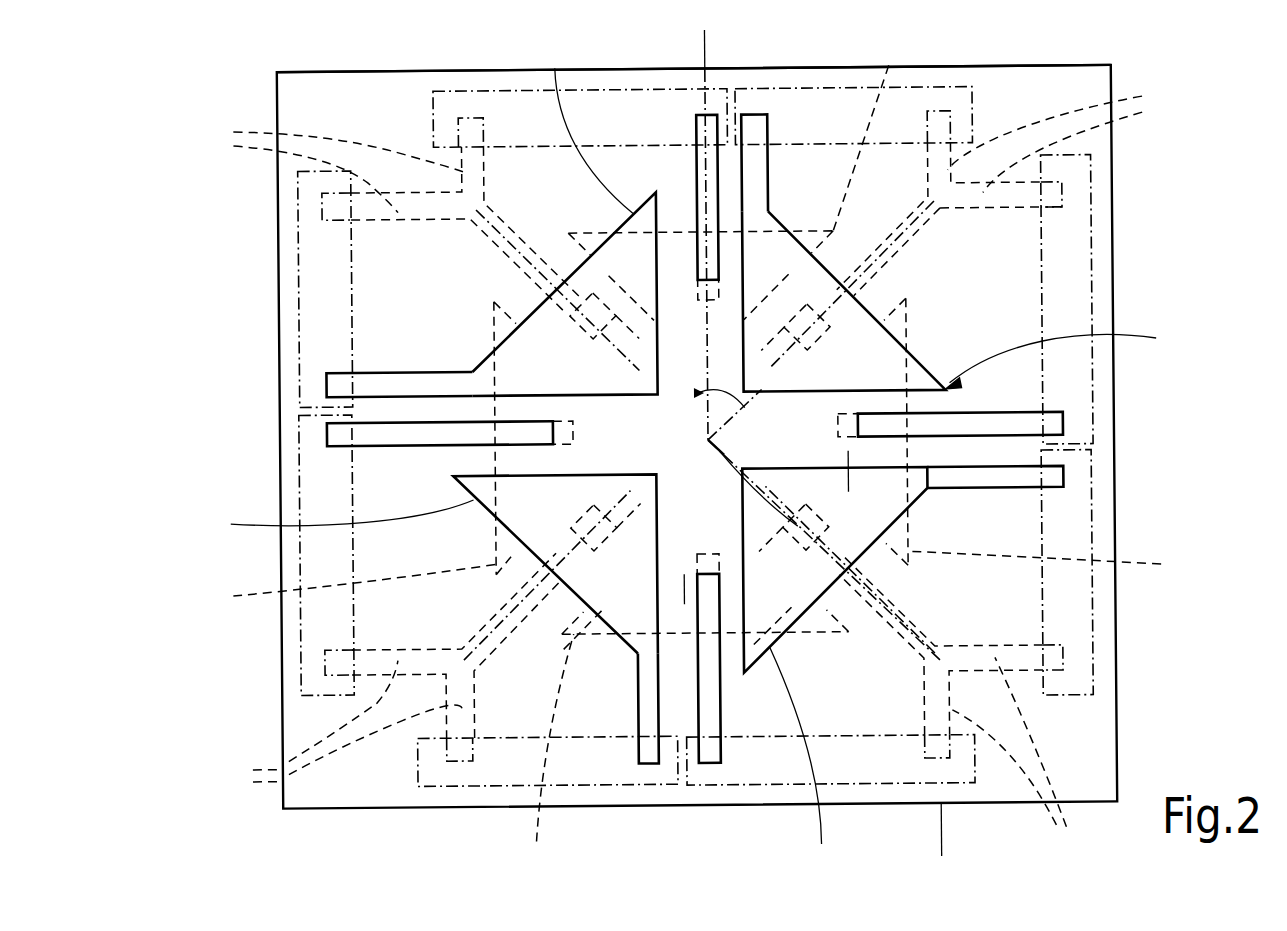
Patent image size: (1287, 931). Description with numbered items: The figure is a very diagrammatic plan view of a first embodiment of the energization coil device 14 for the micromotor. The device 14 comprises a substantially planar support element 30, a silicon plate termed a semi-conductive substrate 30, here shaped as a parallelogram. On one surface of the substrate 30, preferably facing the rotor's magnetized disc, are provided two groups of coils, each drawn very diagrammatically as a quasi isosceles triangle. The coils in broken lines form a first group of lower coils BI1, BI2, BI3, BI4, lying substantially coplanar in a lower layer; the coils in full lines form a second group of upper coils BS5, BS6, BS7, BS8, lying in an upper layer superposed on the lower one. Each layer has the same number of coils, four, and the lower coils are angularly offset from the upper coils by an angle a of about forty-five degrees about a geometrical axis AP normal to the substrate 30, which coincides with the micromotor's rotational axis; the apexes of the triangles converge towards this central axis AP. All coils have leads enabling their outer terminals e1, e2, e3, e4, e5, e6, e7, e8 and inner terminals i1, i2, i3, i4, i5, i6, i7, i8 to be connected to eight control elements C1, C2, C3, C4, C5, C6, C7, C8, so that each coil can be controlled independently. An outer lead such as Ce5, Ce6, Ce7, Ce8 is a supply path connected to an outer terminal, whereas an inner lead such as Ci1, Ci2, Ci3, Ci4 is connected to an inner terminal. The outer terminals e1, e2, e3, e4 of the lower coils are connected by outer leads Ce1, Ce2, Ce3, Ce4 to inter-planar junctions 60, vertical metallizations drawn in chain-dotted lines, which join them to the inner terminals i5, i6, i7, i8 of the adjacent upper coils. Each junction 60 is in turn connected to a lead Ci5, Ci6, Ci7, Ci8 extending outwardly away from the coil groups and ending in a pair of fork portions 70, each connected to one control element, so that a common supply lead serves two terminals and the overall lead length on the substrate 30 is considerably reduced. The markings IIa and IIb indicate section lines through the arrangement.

The energization coil device 14 is at (446, 70).
The support element 30 is at (280, 100).
The fork portions 70 is at (234, 144).
The control element C1 is at (703, 790).
The control element C2 is at (1082, 683).
The control element C3 is at (1066, 433).
The control element C4 is at (928, 106).
The control element C5 is at (513, 114).
The control element C6 is at (322, 276).
The control element C7 is at (302, 678).
The control element C8 is at (428, 766).
The inner lead Ci1 is at (720, 708).
The inner lead Ci2 is at (958, 420).
The inner lead Ci3 is at (700, 178).
The inner lead Ci4 is at (390, 438).
The inner lead Ci5 is at (899, 642).
The inner lead Ci6 is at (918, 250).
The inner lead Ci7 is at (508, 224).
The inner lead Ci8 is at (472, 634).
The outer lead Ce1 is at (768, 548).
The outer lead Ce2 is at (788, 357).
The outer lead Ce3 is at (628, 342).
The outer lead Ce4 is at (624, 505).
The outer lead Ce5 is at (993, 480).
The outer lead Ce6 is at (766, 172).
The outer lead Ce7 is at (393, 382).
The outer lead Ce8 is at (640, 712).
The outer terminal e1 is at (774, 572).
The outer terminal e2 is at (816, 325).
The outer terminal e3 is at (638, 282).
The outer terminal e4 is at (575, 505).
The outer terminal e5 is at (940, 494).
The outer terminal e6 is at (778, 218).
The outer terminal e7 is at (470, 360).
The outer terminal e8 is at (625, 660).
The inner terminal i1 is at (702, 553).
The inner terminal i2 is at (830, 430).
The inner terminal i3 is at (684, 294).
The inner terminal i4 is at (582, 427).
The inner terminal i5 is at (803, 514).
The inner terminal i6 is at (790, 340).
The inner terminal i7 is at (582, 332).
The inner terminal i8 is at (612, 518).
The upper coil BS5 is at (805, 761).
The upper coil BS6 is at (1069, 358).
The upper coil BS7 is at (587, 129).
The upper coil BS8 is at (331, 522).
The lower coil BI1 is at (547, 755).
The lower coil BI2 is at (1056, 568).
The lower coil BI3 is at (872, 135).
The lower coil BI4 is at (345, 595).
The inter-planar junction 60 is at (765, 500).
The angle a is at (719, 387).
The geometrical axis AP is at (706, 442).
The section line IIa is at (700, 60).
The section line IIb is at (856, 451).